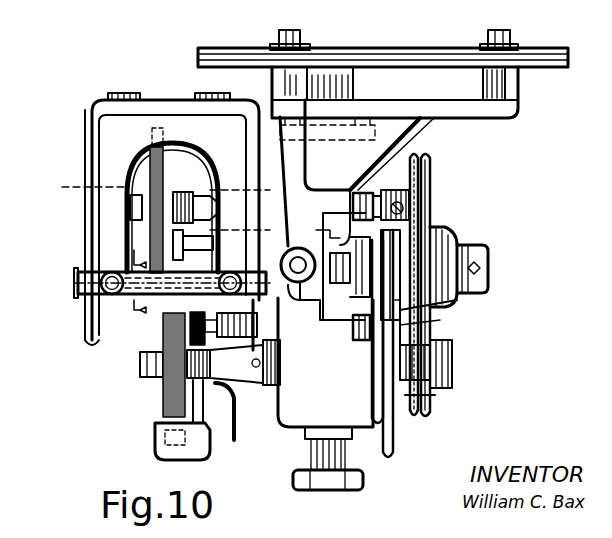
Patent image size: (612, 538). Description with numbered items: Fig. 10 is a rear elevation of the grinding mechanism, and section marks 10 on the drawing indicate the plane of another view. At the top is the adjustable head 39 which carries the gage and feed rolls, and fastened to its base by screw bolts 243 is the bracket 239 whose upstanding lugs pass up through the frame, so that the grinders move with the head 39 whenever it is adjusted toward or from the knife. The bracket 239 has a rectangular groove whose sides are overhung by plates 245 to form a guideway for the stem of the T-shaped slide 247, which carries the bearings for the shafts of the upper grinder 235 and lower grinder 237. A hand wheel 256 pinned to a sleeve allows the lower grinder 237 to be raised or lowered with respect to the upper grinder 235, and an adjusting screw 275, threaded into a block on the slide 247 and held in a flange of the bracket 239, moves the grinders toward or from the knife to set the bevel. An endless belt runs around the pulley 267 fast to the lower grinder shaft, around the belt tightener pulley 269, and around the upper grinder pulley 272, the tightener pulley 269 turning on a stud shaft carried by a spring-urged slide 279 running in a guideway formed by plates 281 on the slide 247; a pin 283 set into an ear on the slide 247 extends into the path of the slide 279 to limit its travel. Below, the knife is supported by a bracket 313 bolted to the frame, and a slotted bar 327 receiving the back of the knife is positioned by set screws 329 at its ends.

The section line 10 is at (133, 281).
The adjustable head 39 is at (351, 60).
The upper grinder 235 is at (148, 155).
The lower grinder 237 is at (165, 400).
The bracket 239 is at (385, 130).
The screw bolts 243 is at (287, 30).
The plates 245 is at (368, 205).
The slide 247 is at (345, 315).
The hand wheel 256 is at (327, 491).
The pulley 267 is at (420, 408).
The belt tightener pulley 269 is at (440, 240).
The pulley 272 is at (422, 172).
The adjusting screw 275 is at (296, 282).
The slide 279 is at (489, 255).
The plates 281 is at (430, 216).
The pin 283 is at (460, 302).
The bracket 313 is at (110, 183).
The bar 327 is at (150, 295).
The set screws 329 is at (100, 274).